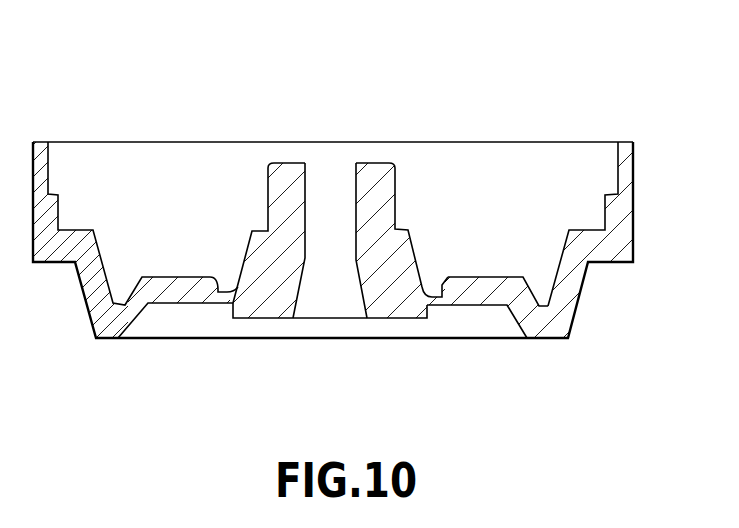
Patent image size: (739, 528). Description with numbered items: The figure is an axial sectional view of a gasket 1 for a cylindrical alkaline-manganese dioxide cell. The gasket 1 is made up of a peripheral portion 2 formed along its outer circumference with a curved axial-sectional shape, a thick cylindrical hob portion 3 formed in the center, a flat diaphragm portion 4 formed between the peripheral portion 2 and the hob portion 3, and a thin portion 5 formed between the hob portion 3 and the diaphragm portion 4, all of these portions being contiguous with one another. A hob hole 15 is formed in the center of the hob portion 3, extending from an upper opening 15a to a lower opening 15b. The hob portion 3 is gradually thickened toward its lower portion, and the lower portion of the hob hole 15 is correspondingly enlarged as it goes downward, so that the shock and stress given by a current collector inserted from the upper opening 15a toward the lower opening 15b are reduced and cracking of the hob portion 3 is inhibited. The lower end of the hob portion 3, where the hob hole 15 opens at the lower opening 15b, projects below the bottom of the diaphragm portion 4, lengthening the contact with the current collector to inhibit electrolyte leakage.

The gasket 1 is at (428, 127).
The peripheral portion 2 is at (627, 223).
The hob portion 3 is at (407, 303).
The diaphragm portion 4 is at (482, 293).
The thin portion 5 is at (438, 300).
The hob hole 15 is at (355, 248).
The upper opening 15a is at (333, 163).
The lower opening 15b is at (332, 318).